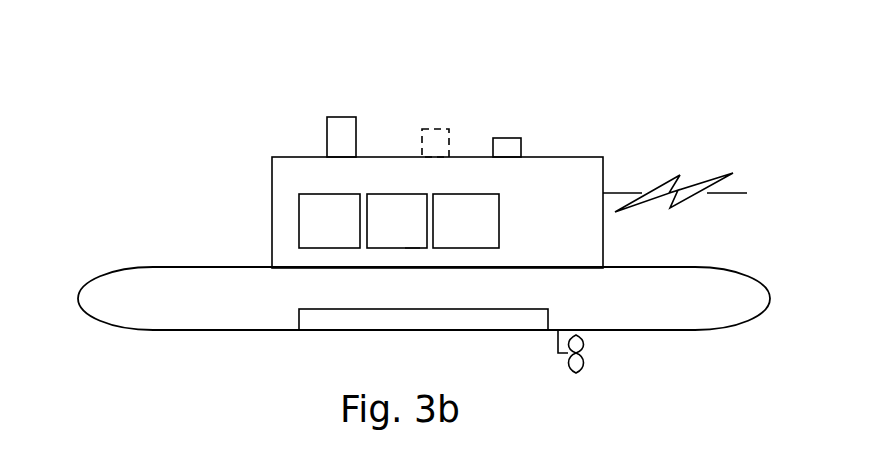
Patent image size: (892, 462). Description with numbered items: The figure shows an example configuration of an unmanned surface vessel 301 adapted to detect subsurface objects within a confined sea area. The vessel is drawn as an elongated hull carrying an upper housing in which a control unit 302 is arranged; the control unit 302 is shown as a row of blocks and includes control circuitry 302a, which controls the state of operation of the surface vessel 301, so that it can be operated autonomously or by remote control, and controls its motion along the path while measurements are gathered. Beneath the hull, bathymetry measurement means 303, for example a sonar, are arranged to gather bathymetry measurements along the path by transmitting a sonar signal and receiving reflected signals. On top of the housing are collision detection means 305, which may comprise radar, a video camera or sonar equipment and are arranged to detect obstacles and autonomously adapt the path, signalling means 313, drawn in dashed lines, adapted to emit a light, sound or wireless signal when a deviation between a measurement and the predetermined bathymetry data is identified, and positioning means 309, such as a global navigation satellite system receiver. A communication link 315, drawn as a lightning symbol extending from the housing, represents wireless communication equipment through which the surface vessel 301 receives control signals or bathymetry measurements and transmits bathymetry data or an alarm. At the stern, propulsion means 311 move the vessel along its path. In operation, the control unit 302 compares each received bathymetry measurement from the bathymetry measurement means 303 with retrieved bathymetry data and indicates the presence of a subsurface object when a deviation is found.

The unmanned surface vessel 301 is at (212, 80).
The control unit 302 is at (330, 193).
The control circuitry 302a is at (412, 249).
The bathymetry measurement means 303 is at (325, 329).
The collision detection means 305 is at (342, 117).
The positioning means 309 is at (503, 138).
The propulsion means 311 is at (585, 366).
The signalling means 313 is at (432, 129).
The communication link 315 is at (692, 168).